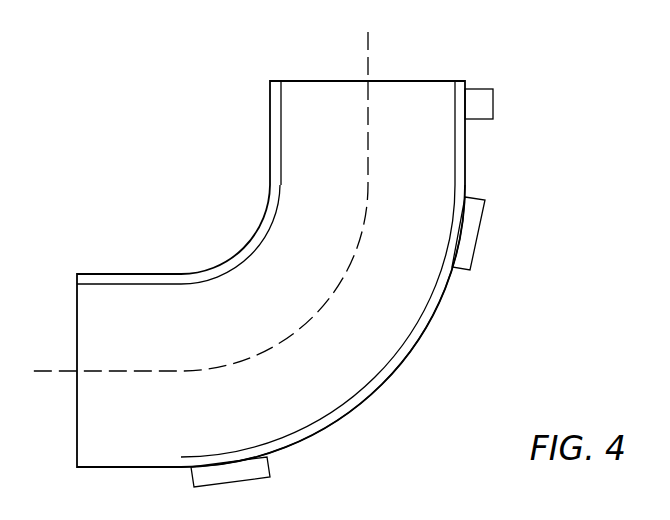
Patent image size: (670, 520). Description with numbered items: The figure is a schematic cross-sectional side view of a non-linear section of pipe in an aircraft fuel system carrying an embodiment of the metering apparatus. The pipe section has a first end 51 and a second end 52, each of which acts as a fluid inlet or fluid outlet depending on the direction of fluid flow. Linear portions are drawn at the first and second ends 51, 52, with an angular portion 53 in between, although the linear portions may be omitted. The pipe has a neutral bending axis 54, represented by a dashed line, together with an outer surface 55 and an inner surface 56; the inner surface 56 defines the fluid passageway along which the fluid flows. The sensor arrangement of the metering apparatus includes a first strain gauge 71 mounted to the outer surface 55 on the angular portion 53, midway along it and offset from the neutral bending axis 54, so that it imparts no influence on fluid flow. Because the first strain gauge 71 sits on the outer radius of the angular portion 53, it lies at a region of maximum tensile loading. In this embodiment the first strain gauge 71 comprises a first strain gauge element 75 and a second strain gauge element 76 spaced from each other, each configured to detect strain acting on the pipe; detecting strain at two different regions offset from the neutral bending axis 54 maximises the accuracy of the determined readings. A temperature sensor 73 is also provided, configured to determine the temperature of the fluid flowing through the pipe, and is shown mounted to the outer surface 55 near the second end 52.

The first end 51 is at (80, 428).
The second end 52 is at (390, 80).
The angular portion 53 is at (433, 307).
The neutral bending axis 54 is at (365, 55).
The outer surface 55 is at (100, 272).
The inner surface 56 is at (160, 287).
The first strain gauge 71 is at (388, 377).
The temperature sensor 73 is at (494, 100).
The first strain gauge element 75 is at (448, 256).
The second strain gauge element 76 is at (247, 458).